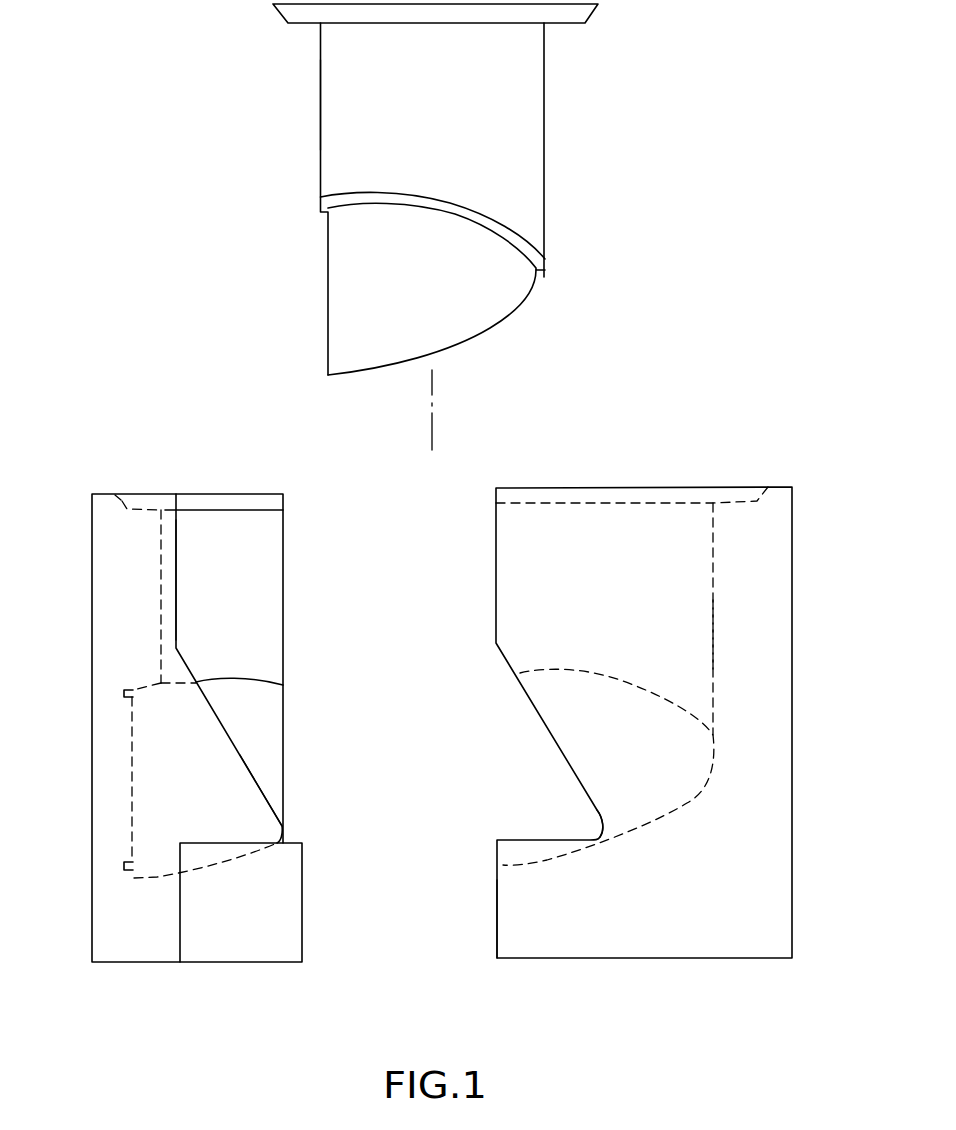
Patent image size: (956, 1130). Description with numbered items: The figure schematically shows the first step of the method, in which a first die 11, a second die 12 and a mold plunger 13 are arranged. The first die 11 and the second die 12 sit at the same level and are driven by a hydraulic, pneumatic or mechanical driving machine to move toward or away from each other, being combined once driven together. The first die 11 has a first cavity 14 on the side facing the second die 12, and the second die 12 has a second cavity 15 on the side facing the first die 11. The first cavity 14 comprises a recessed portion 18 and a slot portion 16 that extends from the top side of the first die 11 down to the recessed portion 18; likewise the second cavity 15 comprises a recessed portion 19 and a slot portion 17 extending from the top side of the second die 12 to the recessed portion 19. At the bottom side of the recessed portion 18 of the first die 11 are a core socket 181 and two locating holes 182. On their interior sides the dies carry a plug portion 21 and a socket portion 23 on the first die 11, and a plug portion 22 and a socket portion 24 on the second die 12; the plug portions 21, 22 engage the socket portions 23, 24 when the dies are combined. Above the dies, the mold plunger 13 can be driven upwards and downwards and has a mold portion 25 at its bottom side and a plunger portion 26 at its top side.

The first die 11 is at (91, 640).
The second die 12 is at (792, 780).
The mold plunger 13 is at (545, 135).
The first cavity 14 is at (258, 567).
The second cavity 15 is at (728, 632).
The slot portion 16 is at (161, 546).
The slot portion 17 is at (713, 570).
The recessed portion 18 is at (153, 877).
The core socket 181 is at (145, 825).
The locating holes 182 is at (123, 694).
The recessed portion 19 is at (674, 810).
The plug portion 21 is at (263, 785).
The plug portion 22 is at (525, 937).
The socket portion 23 is at (223, 933).
The socket portion 24 is at (604, 828).
The mold portion 25 is at (487, 317).
The plunger portion 26 is at (348, 115).